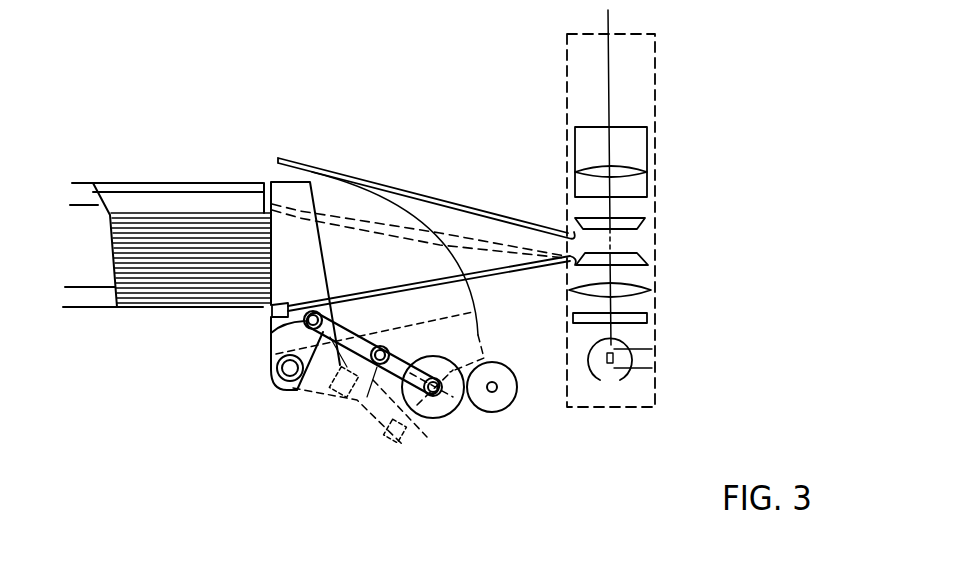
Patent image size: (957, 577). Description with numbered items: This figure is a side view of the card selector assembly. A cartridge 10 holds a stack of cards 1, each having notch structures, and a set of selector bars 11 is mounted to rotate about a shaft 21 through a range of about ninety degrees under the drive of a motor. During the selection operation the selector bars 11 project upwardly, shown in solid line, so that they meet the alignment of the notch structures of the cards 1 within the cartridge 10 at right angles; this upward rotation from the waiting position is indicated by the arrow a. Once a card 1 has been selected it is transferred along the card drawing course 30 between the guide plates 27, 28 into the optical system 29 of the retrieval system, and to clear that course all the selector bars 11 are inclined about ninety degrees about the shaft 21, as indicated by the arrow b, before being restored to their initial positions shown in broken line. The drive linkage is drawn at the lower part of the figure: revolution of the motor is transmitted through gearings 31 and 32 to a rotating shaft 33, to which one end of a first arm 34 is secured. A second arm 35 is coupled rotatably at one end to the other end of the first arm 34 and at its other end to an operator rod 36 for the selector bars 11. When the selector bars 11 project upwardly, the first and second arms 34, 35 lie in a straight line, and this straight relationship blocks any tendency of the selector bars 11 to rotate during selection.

The card 1 is at (143, 287).
The cartridge 10 is at (166, 251).
The selector bar 11 is at (288, 190).
The shaft 21 is at (278, 383).
The guide plate 27 is at (483, 212).
The guide plate 28 is at (522, 267).
The optical system 29 is at (643, 65).
The card drawing course 30 is at (398, 215).
The gearing 31 is at (502, 397).
The gearing 32 is at (450, 407).
The rotating shaft 33 is at (436, 400).
The first arm 34 is at (363, 413).
The second arm 35 is at (355, 330).
The operator rod 36 is at (280, 343).
The arrow a is at (347, 242).
The arrow b is at (447, 257).